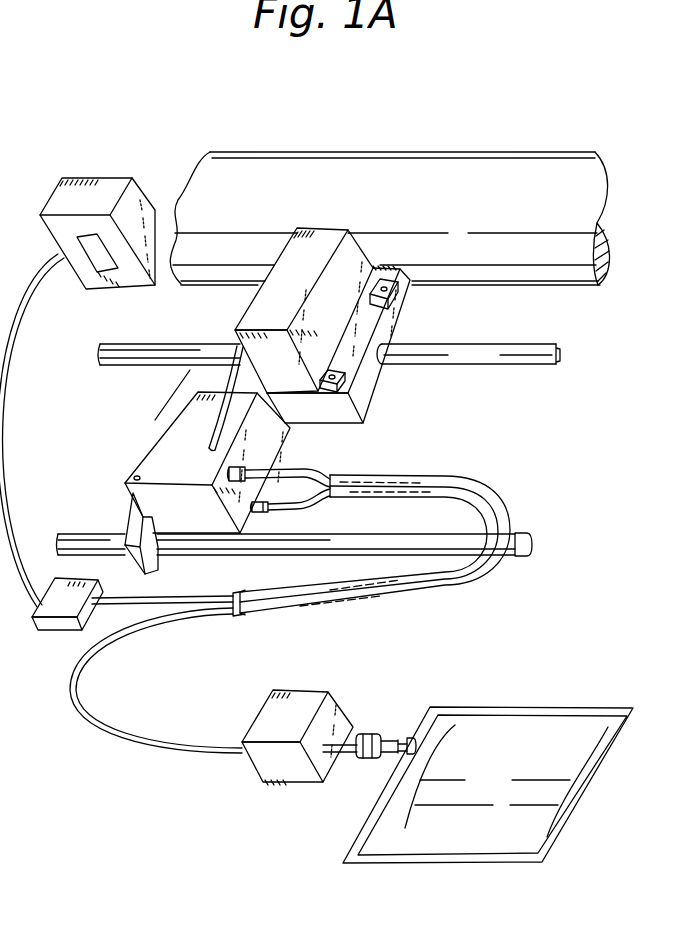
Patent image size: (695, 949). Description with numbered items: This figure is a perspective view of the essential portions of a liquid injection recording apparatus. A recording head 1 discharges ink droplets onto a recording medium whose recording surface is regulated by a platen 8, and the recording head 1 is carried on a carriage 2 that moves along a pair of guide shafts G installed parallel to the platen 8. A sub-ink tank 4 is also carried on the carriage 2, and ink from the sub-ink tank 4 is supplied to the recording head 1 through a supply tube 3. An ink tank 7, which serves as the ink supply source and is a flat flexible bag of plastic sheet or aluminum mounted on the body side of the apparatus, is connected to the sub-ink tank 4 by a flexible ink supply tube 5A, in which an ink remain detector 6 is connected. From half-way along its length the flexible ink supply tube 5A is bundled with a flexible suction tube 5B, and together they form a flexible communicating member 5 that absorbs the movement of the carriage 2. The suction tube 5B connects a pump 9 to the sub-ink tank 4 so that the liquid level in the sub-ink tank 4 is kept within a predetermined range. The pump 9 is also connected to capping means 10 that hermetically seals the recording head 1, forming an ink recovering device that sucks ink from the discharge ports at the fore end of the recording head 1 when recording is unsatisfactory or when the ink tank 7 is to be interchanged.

The recording head 1 is at (318, 238).
The carriage 2 is at (420, 308).
The supply tube 3 is at (228, 375).
The sub-ink tank 4 is at (173, 431).
The flexible communicating member 5 is at (442, 480).
The flexible ink supply tube 5A is at (80, 692).
The flexible suction tube 5B is at (178, 594).
The ink remain detector 6 is at (308, 692).
The ink tank 7 is at (453, 842).
The platen 8 is at (483, 160).
The pump 9 is at (58, 610).
The capping means 10 is at (98, 183).
The guide shafts G is at (537, 358).